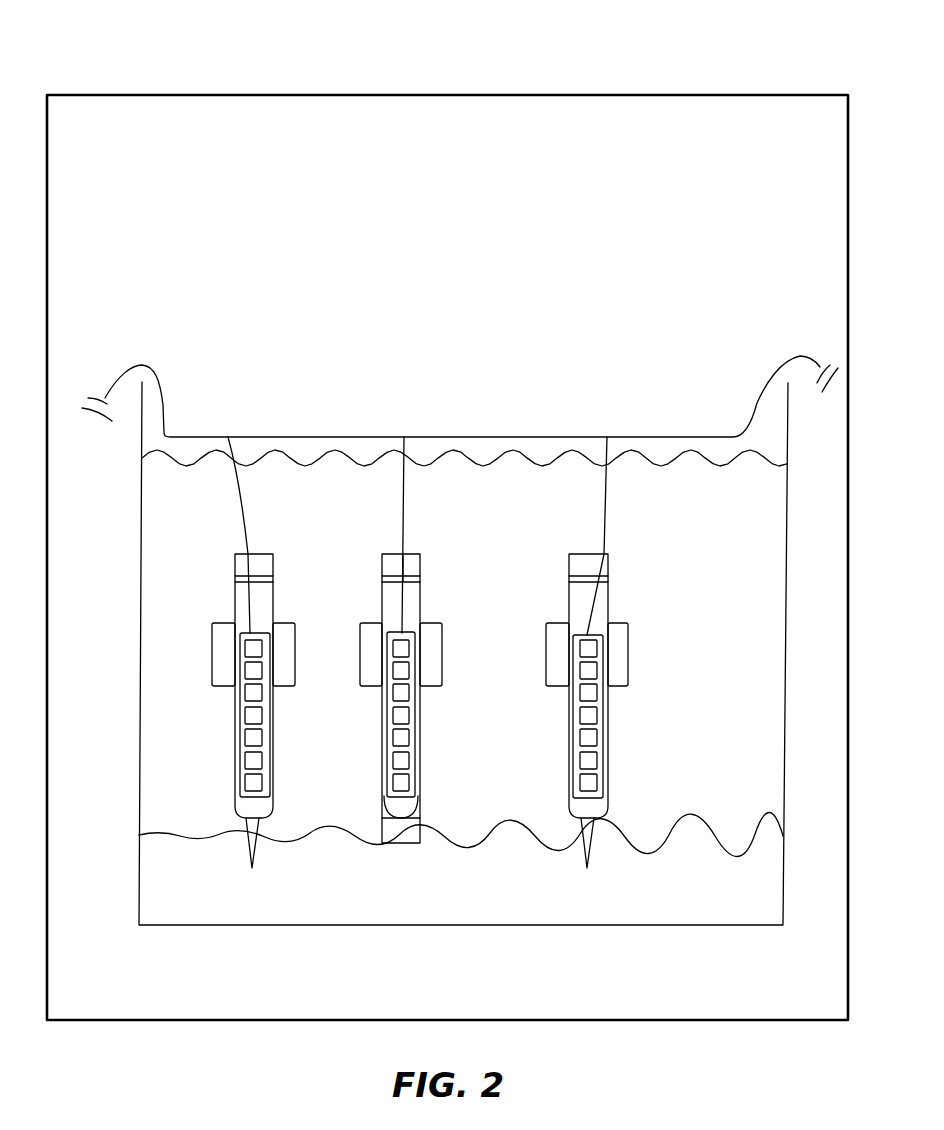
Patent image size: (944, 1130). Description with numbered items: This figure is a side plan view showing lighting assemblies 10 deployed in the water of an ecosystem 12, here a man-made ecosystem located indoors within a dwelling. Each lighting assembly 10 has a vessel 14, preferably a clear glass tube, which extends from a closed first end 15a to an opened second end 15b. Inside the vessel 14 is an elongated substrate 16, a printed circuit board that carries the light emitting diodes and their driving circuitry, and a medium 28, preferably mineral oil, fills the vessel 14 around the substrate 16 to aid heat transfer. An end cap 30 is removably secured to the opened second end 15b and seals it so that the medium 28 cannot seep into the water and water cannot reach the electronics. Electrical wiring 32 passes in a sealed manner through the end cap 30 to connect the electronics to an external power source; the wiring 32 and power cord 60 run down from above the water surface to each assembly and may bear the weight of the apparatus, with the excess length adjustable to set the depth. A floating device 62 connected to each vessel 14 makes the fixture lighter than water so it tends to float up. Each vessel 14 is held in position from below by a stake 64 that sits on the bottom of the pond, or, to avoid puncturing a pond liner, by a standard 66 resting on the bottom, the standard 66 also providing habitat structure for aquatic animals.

The lighting assembly 10 is at (143, 297).
The ecosystem 12 is at (540, 76).
The vessel 14 is at (407, 661).
The closed first end 15a is at (420, 813).
The opened second end 15b is at (381, 567).
The substrate 16 is at (410, 648).
The medium 28 is at (423, 618).
The end cap 30 is at (410, 568).
The electrical wiring 32 is at (249, 487).
The power cord 60 is at (165, 418).
The floating device 62 is at (545, 665).
The stake 64 is at (256, 840).
The standard 66 is at (392, 829).